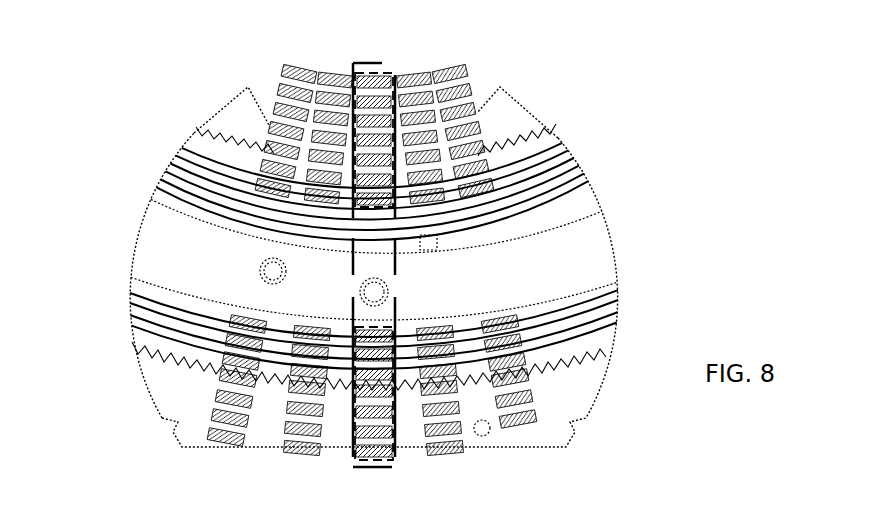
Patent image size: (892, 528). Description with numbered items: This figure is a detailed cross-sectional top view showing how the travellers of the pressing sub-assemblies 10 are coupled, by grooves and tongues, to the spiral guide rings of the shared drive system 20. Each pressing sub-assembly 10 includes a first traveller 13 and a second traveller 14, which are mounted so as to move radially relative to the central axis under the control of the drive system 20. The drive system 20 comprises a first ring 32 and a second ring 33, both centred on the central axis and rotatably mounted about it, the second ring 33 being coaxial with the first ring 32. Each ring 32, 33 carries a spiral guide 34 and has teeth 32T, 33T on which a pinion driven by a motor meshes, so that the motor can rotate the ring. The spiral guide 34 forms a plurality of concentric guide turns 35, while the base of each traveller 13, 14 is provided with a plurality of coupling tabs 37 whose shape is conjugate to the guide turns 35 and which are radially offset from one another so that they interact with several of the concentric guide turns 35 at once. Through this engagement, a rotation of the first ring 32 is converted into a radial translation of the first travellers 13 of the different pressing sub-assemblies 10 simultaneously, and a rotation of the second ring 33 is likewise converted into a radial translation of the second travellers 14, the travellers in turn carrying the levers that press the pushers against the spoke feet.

The pressing sub-assembly 10 is at (342, 267).
The first traveller 13 is at (344, 123).
The second traveller 14 is at (342, 439).
The drive system 20 is at (718, 144).
The first ring 32 is at (202, 142).
The teeth of first ring 32T is at (203, 140).
The second ring 33 is at (170, 293).
The teeth of second ring 33T is at (183, 368).
The spiral guide 34 is at (165, 161).
The concentric guide turns 35 is at (565, 158).
The coupling tabs 37 is at (378, 72).